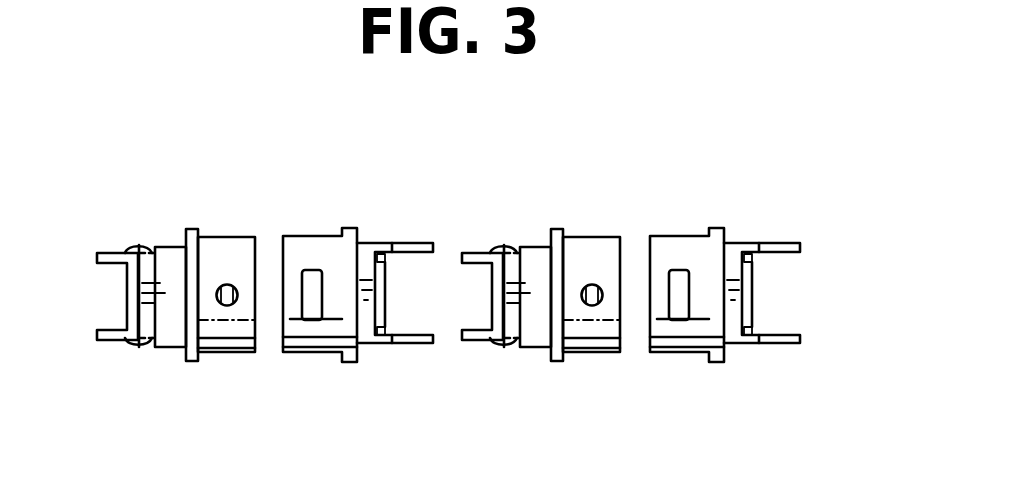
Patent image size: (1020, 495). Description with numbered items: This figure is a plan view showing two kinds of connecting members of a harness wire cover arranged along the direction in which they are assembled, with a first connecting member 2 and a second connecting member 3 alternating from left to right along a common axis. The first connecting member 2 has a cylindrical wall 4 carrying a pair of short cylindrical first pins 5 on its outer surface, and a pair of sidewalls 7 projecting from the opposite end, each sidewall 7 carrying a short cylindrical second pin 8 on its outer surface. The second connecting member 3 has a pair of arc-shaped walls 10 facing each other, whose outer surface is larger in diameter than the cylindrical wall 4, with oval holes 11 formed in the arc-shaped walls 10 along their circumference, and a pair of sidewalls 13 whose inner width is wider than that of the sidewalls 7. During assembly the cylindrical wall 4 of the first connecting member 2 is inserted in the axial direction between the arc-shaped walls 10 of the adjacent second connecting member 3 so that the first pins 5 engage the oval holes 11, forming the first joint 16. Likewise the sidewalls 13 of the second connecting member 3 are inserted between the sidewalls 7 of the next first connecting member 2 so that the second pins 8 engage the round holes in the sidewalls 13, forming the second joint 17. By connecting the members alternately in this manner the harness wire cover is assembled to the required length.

The first connecting member 2 is at (165, 224).
The second connecting member 3 is at (376, 224).
The cylindrical wall 4 is at (222, 352).
The first pins 5 is at (227, 284).
The sidewalls 7 is at (492, 345).
The second pins 8 is at (147, 347).
The arc-shaped walls 10 is at (320, 332).
The oval holes 11 is at (311, 271).
The sidewalls 13 is at (507, 430).
The first joint 16 is at (256, 356).
The second joint 17 is at (553, 356).